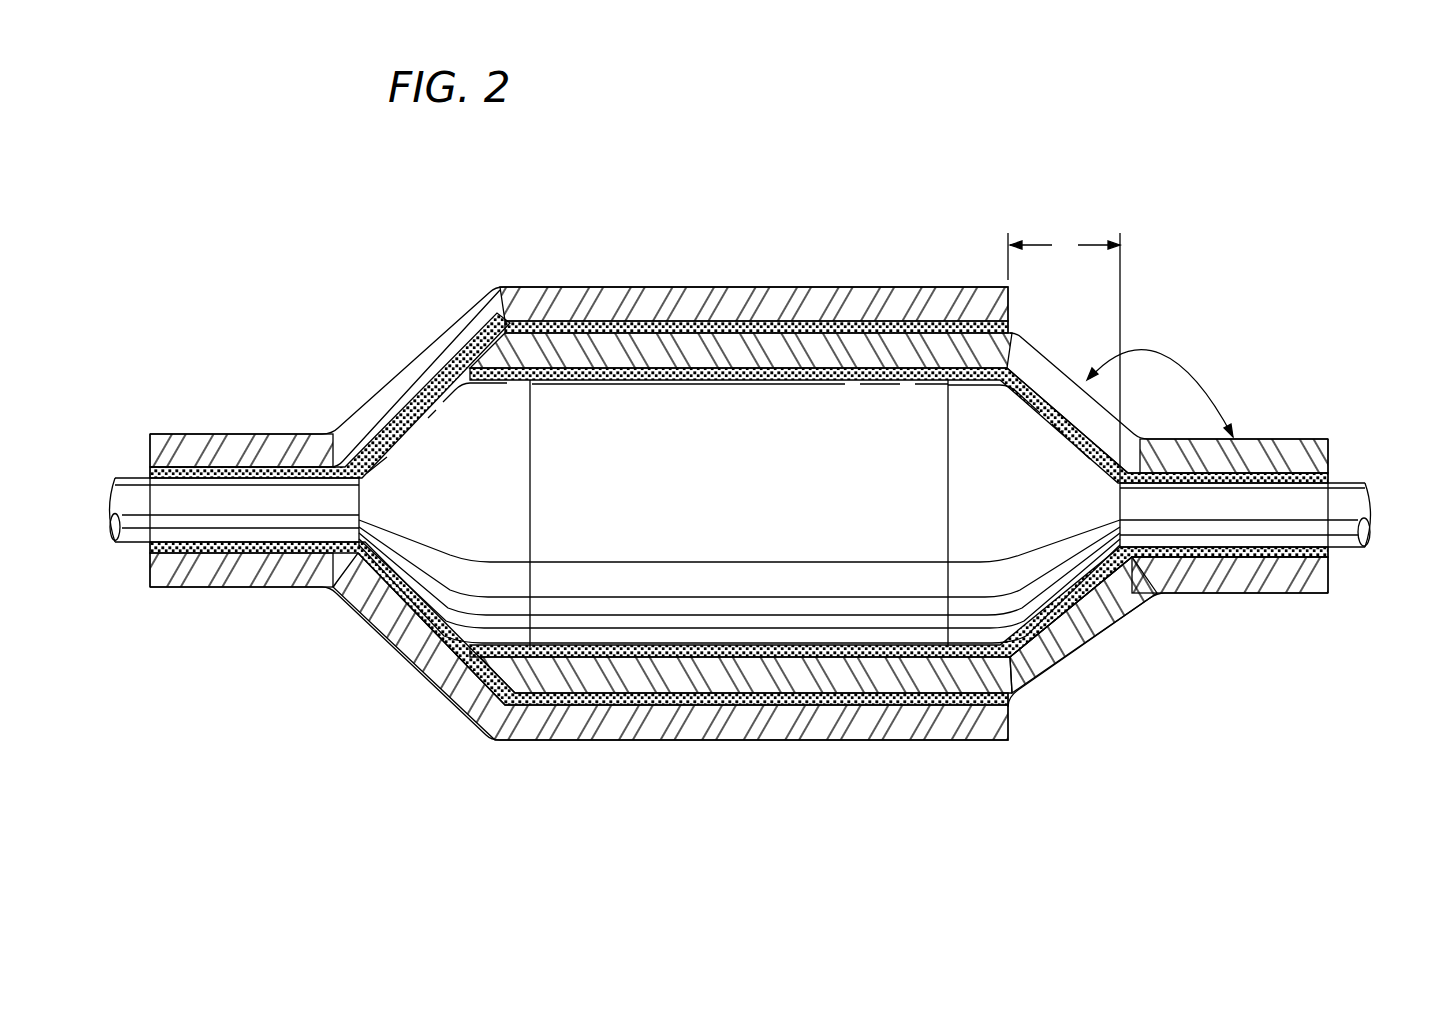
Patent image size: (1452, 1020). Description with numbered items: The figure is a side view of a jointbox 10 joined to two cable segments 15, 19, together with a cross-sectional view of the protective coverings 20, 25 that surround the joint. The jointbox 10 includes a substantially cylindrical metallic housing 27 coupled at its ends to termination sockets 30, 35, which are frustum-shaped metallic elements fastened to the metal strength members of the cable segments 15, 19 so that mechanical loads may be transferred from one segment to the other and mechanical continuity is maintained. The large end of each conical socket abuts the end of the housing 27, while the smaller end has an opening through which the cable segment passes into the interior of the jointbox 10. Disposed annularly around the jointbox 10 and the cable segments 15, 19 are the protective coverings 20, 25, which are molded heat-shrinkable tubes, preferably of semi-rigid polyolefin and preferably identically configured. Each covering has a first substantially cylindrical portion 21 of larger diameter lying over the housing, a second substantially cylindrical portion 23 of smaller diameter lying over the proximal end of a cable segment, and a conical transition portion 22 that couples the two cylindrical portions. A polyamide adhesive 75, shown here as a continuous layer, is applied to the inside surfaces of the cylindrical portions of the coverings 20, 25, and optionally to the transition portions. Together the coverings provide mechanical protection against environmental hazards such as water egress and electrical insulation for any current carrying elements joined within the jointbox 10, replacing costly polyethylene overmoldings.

The jointbox 10 is at (733, 529).
The cable segment 15 is at (235, 512).
The cable segment 19 is at (1245, 515).
The protective covering 20 is at (1328, 460).
The first substantially cylindrical portion 21 is at (792, 350).
The conical transition portion 22 is at (423, 353).
The second substantially cylindrical portion 23 is at (1278, 438).
The protective covering 25 is at (182, 453).
The metallic housing 27 is at (700, 422).
The termination socket 30 is at (842, 374).
The termination socket 35 is at (1042, 504).
The adhesive 75 is at (952, 327).